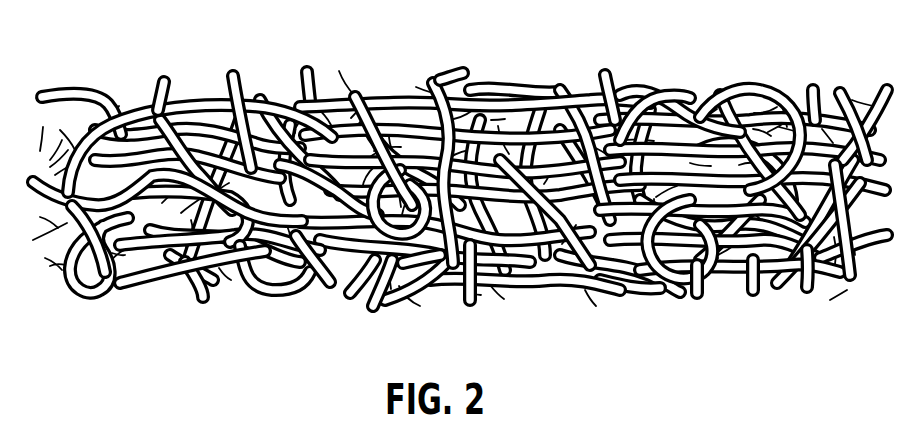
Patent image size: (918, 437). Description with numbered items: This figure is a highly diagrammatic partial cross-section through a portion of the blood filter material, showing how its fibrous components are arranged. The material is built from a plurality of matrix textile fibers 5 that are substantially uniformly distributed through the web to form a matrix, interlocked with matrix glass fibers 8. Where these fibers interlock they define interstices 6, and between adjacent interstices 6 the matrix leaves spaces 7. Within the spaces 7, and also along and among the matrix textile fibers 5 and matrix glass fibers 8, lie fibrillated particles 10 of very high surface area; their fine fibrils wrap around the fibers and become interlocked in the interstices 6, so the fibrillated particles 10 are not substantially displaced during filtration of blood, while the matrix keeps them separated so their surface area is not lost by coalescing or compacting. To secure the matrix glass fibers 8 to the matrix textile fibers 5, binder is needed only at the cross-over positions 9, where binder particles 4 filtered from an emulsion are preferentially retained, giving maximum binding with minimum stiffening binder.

The binder particles 4 is at (607, 93).
The matrix textile fibers 5 is at (147, 280).
The interstices 6 is at (258, 97).
The spaces 7 is at (658, 87).
The matrix glass fibers 8 is at (170, 107).
The cross-over positions 9 is at (590, 300).
The fibrillated particles 10 is at (148, 100).